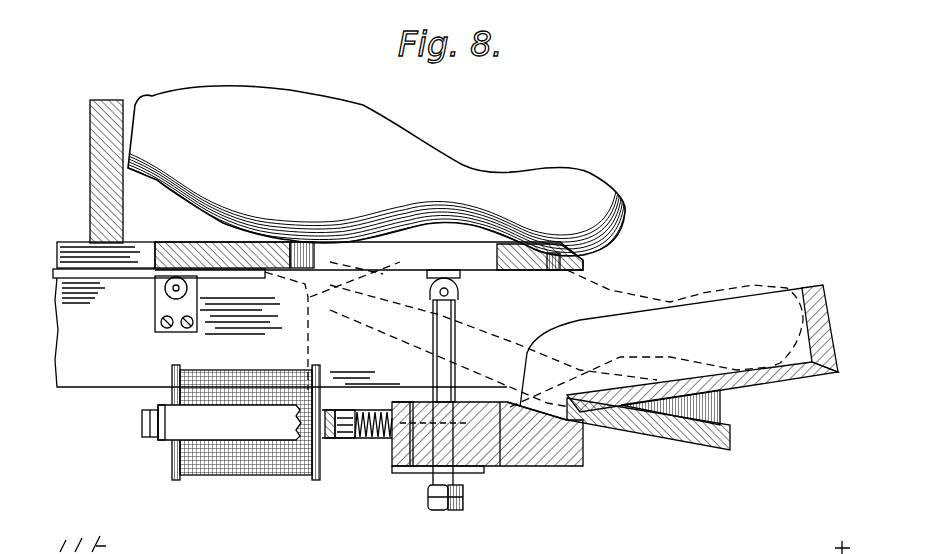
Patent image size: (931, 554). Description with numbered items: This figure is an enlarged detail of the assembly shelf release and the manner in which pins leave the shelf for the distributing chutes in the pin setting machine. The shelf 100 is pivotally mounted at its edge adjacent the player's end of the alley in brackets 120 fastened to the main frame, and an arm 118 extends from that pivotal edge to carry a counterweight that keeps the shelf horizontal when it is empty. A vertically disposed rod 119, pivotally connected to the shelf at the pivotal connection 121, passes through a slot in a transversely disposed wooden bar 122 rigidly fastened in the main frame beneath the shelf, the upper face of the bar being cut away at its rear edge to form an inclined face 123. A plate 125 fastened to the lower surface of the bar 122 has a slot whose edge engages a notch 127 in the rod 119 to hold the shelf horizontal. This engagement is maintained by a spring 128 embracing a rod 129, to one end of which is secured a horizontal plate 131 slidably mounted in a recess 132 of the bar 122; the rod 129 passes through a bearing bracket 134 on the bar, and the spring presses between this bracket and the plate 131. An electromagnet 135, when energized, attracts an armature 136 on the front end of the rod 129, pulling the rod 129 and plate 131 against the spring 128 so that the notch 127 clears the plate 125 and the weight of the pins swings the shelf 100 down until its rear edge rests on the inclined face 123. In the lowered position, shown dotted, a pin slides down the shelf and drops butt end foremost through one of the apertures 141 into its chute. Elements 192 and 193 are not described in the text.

The shelf 100 is at (262, 258).
The arm 118 is at (90, 277).
The rod 119 is at (440, 322).
The brackets 120 is at (176, 288).
The pivotal connection 121 is at (458, 288).
The bar 122 is at (543, 466).
The inclined face 123 is at (575, 428).
The plate 125 is at (473, 473).
The notch 127 is at (462, 482).
The spring 128 is at (365, 442).
The rod 129 is at (380, 442).
The horizontal plate 131 is at (412, 400).
The recess 132 is at (406, 478).
The bearing bracket 134 is at (336, 392).
The electromagnet 135 is at (214, 473).
The armature 136 is at (334, 438).
The apertures 141 is at (505, 268).
The chute wall 192 is at (806, 272).
The chute bar 193 is at (733, 440).